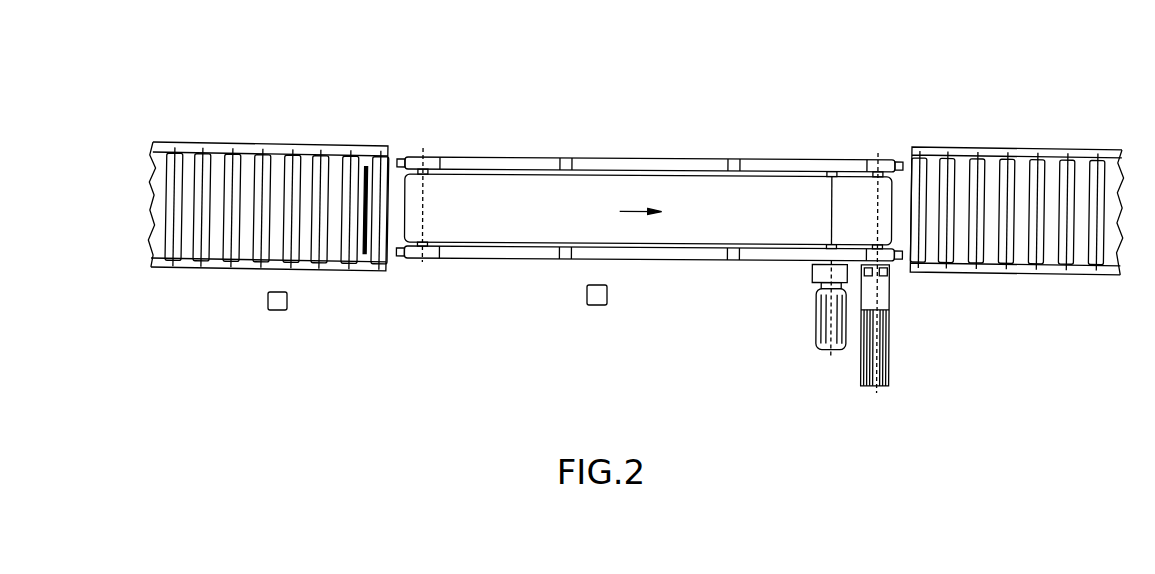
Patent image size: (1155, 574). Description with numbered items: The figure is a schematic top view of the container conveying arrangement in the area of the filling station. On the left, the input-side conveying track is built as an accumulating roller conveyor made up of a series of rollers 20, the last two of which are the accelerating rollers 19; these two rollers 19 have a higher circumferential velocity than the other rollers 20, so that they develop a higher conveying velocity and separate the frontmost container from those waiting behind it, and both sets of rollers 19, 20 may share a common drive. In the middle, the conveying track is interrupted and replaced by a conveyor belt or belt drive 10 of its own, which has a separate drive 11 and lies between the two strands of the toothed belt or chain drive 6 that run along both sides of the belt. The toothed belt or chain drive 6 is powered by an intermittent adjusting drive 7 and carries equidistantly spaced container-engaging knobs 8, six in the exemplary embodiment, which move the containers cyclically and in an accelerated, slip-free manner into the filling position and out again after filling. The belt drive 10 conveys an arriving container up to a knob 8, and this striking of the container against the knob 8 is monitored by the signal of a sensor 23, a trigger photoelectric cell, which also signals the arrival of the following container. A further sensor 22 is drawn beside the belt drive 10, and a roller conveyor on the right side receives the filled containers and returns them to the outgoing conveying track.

The toothed belt or chain drive 6 is at (502, 157).
The intermittent adjusting drive 7 is at (890, 348).
The container-engaging knobs 8 is at (732, 157).
The conveyor belt or belt drive 10 is at (622, 180).
The separate drive 11 is at (815, 345).
The accelerating rollers 19 is at (382, 148).
The other rollers 20 is at (318, 148).
The sensor 22 is at (588, 305).
The sensor 23 is at (268, 310).